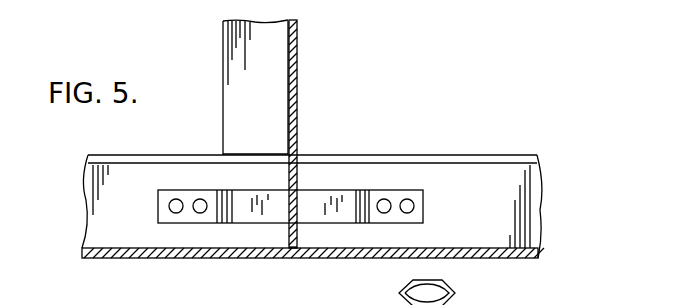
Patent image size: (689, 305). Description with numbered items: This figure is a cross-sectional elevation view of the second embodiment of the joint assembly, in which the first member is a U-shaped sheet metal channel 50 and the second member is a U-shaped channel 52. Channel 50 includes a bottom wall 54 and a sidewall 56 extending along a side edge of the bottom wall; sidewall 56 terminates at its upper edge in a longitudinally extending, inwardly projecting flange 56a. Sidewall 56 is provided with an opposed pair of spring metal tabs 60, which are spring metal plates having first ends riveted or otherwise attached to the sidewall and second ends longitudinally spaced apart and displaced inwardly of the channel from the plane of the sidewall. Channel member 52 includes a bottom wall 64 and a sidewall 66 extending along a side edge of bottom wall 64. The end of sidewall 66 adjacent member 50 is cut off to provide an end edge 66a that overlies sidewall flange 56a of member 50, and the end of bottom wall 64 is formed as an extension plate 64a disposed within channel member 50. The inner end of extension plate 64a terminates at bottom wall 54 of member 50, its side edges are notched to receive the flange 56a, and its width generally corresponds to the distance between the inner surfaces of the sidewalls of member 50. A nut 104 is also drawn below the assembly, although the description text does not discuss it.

The U-shaped sheet metal channel 50 is at (323, 203).
The U-shaped channel 52 is at (272, 162).
The bottom wall 54 is at (88, 258).
The sidewall 56 is at (517, 180).
The inwardly projecting flange 56a is at (450, 152).
The spring metal tabs 60 is at (312, 200).
The bottom wall 64 is at (300, 80).
The extension plate 64a is at (298, 228).
The sidewall 66 is at (237, 37).
The end edge 66a is at (252, 155).
The nut 104 is at (447, 283).